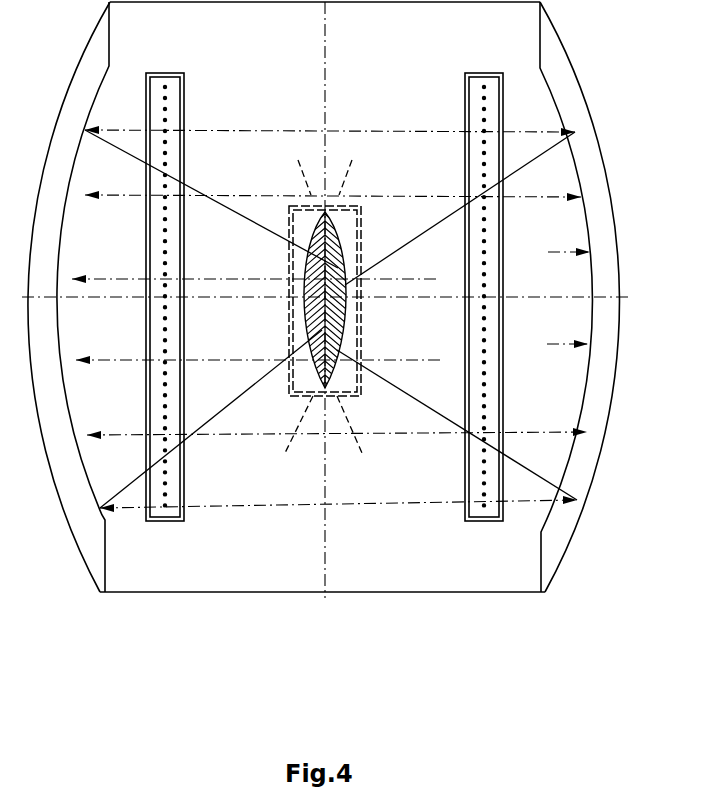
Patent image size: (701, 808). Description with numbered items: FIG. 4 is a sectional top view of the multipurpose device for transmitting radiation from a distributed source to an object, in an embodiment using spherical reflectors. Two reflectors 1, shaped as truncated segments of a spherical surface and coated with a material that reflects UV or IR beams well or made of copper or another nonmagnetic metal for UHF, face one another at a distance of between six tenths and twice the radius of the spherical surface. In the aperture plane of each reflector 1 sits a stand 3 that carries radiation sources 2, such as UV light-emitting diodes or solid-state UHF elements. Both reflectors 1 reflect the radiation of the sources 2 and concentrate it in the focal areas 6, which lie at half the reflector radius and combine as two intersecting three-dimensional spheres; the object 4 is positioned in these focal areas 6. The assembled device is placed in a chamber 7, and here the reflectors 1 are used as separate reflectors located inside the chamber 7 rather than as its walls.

The reflector 1 is at (84, 512).
The radiation source 2 is at (170, 521).
The stand 3 is at (149, 521).
The object 4 is at (361, 228).
The focal area 6 is at (336, 350).
The chamber 7 is at (305, 592).